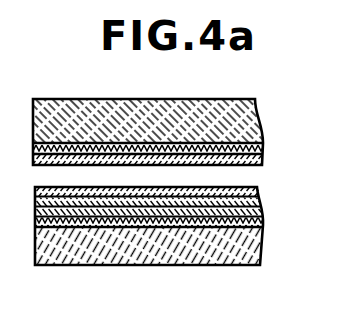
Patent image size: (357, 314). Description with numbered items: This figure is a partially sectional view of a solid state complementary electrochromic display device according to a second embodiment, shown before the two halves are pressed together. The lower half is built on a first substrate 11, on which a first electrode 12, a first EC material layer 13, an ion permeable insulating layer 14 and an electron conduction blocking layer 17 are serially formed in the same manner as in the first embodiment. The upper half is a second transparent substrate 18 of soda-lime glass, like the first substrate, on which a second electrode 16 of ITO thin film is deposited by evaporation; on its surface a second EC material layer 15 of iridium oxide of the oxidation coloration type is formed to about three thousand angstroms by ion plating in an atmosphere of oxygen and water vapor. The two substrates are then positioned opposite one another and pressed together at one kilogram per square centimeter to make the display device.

The first substrate 11 is at (247, 245).
The first electrode 12 is at (262, 221).
The first EC material layer 13 is at (262, 209).
The ion permeable insulating layer 14 is at (262, 199).
The second EC material layer 15 is at (263, 158).
The second electrode 16 is at (262, 145).
The electron conduction blocking layer 17 is at (258, 190).
The second transparent substrate 18 is at (256, 117).